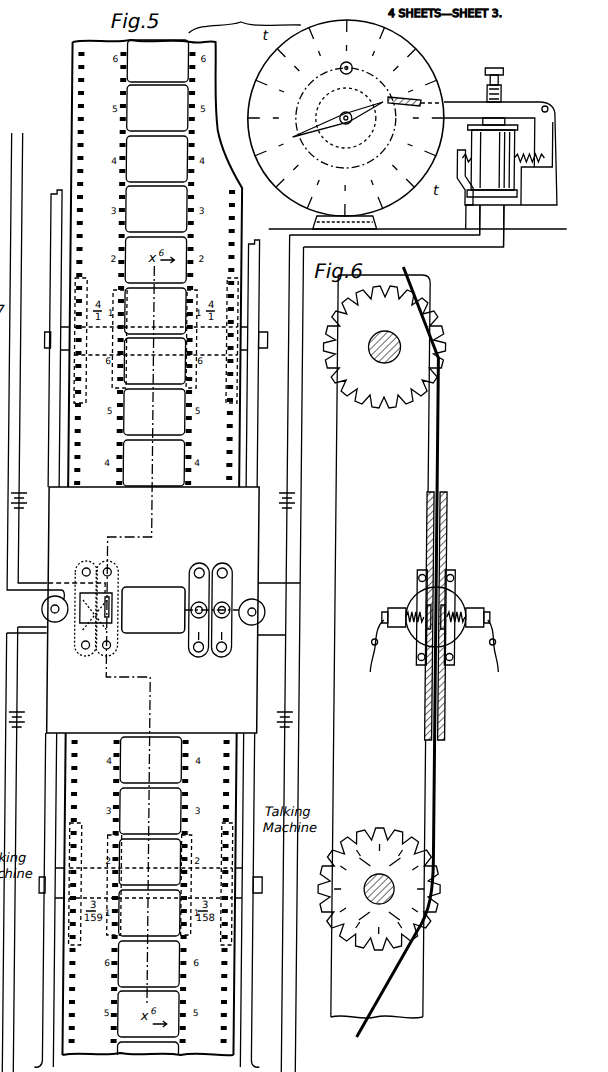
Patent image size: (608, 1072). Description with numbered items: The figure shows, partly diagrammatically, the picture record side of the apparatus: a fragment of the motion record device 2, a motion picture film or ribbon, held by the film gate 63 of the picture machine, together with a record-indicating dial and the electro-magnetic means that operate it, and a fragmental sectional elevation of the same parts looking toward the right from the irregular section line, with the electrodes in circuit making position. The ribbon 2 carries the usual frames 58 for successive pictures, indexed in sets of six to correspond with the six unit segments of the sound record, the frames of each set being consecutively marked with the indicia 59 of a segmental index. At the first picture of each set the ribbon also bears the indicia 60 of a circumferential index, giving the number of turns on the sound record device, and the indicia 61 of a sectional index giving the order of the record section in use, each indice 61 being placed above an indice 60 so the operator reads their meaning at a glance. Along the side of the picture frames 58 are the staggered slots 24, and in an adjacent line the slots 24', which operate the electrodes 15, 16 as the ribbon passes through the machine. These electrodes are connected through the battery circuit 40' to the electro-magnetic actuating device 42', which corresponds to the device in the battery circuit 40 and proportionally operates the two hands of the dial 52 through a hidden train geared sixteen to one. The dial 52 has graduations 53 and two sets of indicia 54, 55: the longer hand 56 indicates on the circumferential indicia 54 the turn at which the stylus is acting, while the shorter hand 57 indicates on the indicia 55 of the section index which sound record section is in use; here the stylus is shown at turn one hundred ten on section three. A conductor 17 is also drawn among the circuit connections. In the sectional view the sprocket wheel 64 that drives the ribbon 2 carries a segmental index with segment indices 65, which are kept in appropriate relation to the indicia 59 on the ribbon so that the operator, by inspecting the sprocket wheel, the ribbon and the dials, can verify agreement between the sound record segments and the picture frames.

In FIG. 5, the motion record device 2 is at (71, 165).
In FIG. 6, the motion record device 2 is at (443, 417).
In FIG. 5, the electrode 15 is at (200, 602).
In FIG. 6, the electrode 15 is at (456, 612).
In FIG. 5, the electrode 16 is at (120, 630).
In FIG. 6, the electrode 16 is at (428, 612).
In FIG. 5, the conductor 17 is at (306, 665).
In FIG. 5, the staggered slots 24 is at (113, 606).
In FIG. 6, the staggered slots 24 is at (392, 646).
In FIG. 5, the slots 24' is at (155, 338).
In FIG. 6, the slots 24' is at (480, 649).
In FIG. 5, the battery circuit 40 is at (423, 118).
In FIG. 5, the battery circuit 40' is at (386, 410).
In FIG. 5, the electro-magnetic actuating device 42' is at (501, 144).
In FIG. 5, the dial 52 is at (428, 96).
In FIG. 5, the graduations 53 is at (388, 27).
In FIG. 5, the circumferential indicia 54 is at (285, 62).
In FIG. 5, the section index indicia 55 is at (276, 94).
In FIG. 5, the longer hand 56 is at (293, 137).
In FIG. 5, the shorter hand 57 is at (413, 82).
In FIG. 5, the frames 58 is at (157, 193).
In FIG. 5, the segmental index indicia 59 is at (115, 108).
In FIG. 5, the circumferential index indicia 60 is at (214, 326).
In FIG. 5, the sectional index indicia 61 is at (213, 303).
In FIG. 5, the film gate 63 is at (153, 610).
In FIG. 6, the film gate 63 is at (450, 527).
In FIG. 6, the sprocket wheel 64 is at (379, 828).
In FIG. 6, the segment indices 65 is at (386, 942).